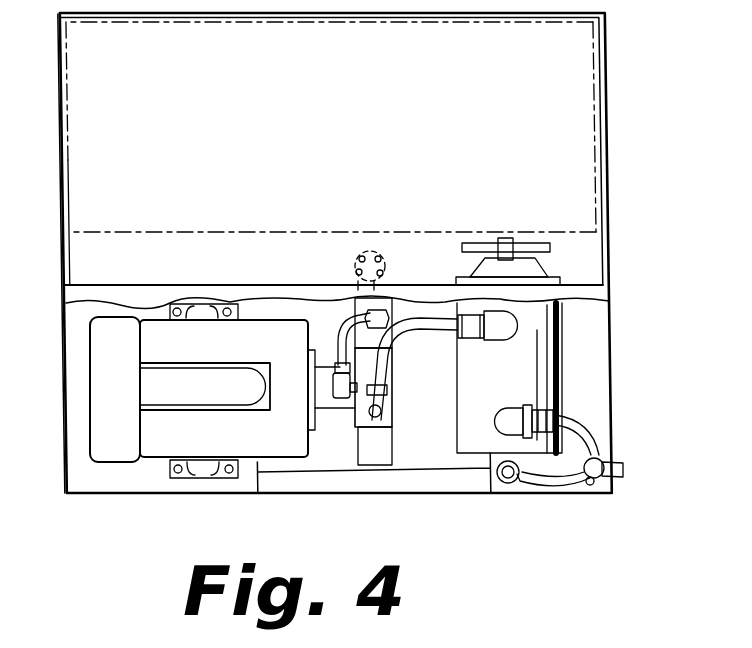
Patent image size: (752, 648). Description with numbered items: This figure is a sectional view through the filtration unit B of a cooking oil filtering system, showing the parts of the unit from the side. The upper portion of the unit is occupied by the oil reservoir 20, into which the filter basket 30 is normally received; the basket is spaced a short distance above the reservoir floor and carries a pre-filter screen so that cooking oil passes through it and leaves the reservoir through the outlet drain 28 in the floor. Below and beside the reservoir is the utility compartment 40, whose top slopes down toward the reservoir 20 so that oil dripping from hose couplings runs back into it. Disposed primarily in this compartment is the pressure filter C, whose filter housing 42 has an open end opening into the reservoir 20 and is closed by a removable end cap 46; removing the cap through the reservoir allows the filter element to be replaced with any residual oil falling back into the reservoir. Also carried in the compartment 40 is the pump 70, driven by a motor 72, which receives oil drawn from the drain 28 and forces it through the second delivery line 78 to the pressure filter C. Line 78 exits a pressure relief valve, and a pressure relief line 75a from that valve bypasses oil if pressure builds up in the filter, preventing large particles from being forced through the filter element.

The oil reservoir 20 is at (372, 114).
The outlet drain 28 is at (392, 256).
The filter basket 30 is at (486, 22).
The compartment 40 is at (102, 482).
The filter housing 42 is at (560, 337).
The removable end cap 46 is at (543, 273).
The pump 70 is at (397, 412).
The motor 72 is at (202, 391).
The pressure relief line 75a is at (328, 307).
The second delivery line 78 is at (405, 338).
The filtration unit B is at (643, 60).
The pressure filter C is at (584, 382).